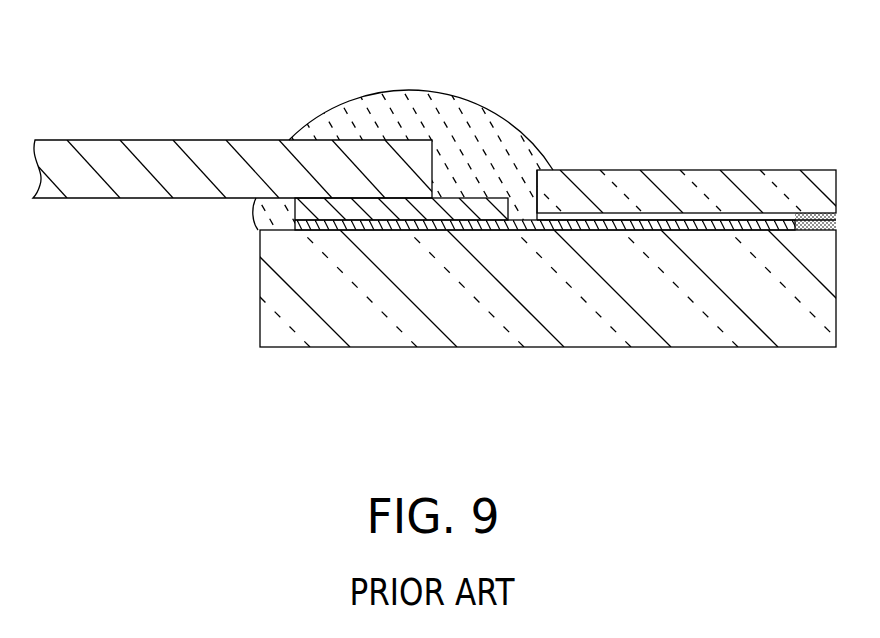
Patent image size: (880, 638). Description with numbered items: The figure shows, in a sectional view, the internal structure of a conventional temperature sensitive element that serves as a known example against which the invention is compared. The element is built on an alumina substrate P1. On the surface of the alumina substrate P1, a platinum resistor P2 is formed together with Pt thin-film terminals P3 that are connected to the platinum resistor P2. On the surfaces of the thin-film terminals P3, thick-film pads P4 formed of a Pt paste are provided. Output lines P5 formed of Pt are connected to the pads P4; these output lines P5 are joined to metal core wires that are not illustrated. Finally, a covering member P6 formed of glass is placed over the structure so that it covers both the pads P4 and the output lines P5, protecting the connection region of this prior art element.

The alumina substrate P1 is at (585, 347).
The platinum resistor P2 is at (667, 225).
The Pt thin-film terminals P3 is at (383, 230).
The thick-film pads P4 is at (475, 202).
The output lines P5 is at (192, 148).
The covering member P6 is at (403, 107).